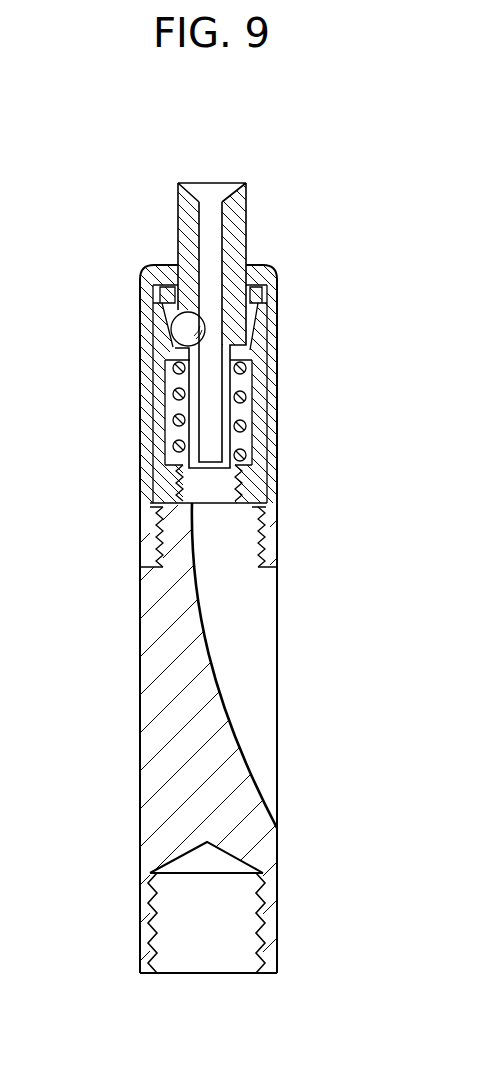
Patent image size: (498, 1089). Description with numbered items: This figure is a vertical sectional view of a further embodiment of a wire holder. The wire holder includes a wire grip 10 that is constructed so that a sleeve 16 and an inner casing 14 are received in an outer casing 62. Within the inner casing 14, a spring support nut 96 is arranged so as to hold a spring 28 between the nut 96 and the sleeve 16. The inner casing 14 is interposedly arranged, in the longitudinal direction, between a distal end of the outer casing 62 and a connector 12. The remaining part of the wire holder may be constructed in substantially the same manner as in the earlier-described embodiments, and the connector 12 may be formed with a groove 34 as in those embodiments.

The wire grip 10 is at (284, 206).
The connector 12 is at (138, 727).
The inner casing 14 is at (260, 370).
The sleeve 16 is at (184, 213).
The spring 28 is at (162, 421).
The groove 34 is at (262, 740).
The outer casing 62 is at (277, 334).
The spring support nut 96 is at (236, 478).